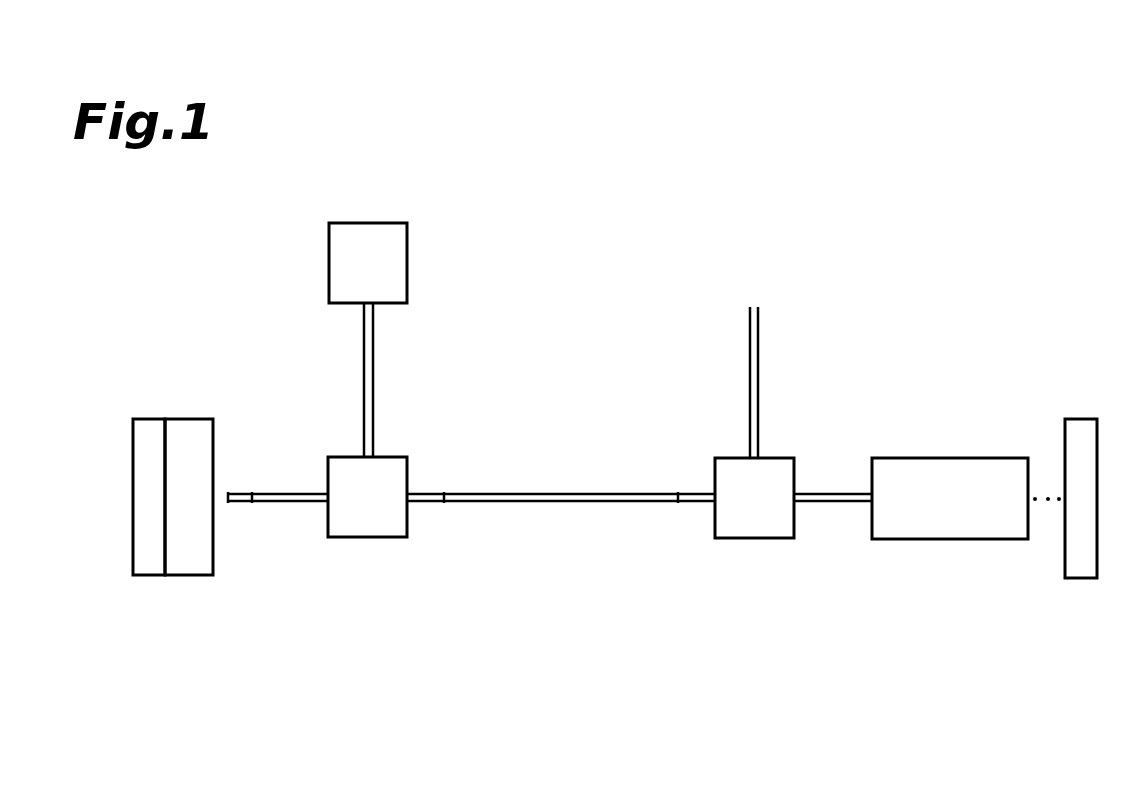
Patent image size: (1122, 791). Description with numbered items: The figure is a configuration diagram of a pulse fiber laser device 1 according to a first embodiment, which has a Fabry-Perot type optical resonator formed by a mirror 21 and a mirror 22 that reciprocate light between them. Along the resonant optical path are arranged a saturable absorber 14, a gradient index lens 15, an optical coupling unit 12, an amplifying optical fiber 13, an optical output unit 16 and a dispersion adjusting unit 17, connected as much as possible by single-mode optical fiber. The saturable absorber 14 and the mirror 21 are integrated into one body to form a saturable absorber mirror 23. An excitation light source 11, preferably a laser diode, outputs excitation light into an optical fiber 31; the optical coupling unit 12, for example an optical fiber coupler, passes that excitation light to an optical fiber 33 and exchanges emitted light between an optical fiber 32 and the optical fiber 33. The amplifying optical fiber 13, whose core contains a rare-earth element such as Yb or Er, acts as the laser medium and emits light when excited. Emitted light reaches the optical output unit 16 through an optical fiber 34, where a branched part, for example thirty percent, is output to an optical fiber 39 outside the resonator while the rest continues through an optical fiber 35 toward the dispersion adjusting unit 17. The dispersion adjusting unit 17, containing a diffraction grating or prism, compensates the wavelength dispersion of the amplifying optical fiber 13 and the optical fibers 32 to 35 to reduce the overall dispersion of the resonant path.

The pulse fiber laser device 1 is at (995, 166).
The excitation light source 11 is at (328, 268).
The optical coupling unit 12 is at (363, 522).
The amplifying optical fiber 13 is at (560, 503).
The saturable absorber 14 is at (190, 562).
The gradient index lens 15 is at (240, 503).
The optical output unit 16 is at (749, 524).
The dispersion adjusting unit 17 is at (910, 528).
The mirror 21 is at (152, 562).
The mirror 22 is at (1081, 560).
The saturable absorber mirror 23 is at (166, 569).
The optical fiber 31 is at (364, 364).
The optical fiber 32 is at (290, 503).
The optical fiber 33 is at (424, 503).
The optical fiber 34 is at (697, 503).
The optical fiber 35 is at (831, 503).
The optical fiber 39 is at (760, 353).